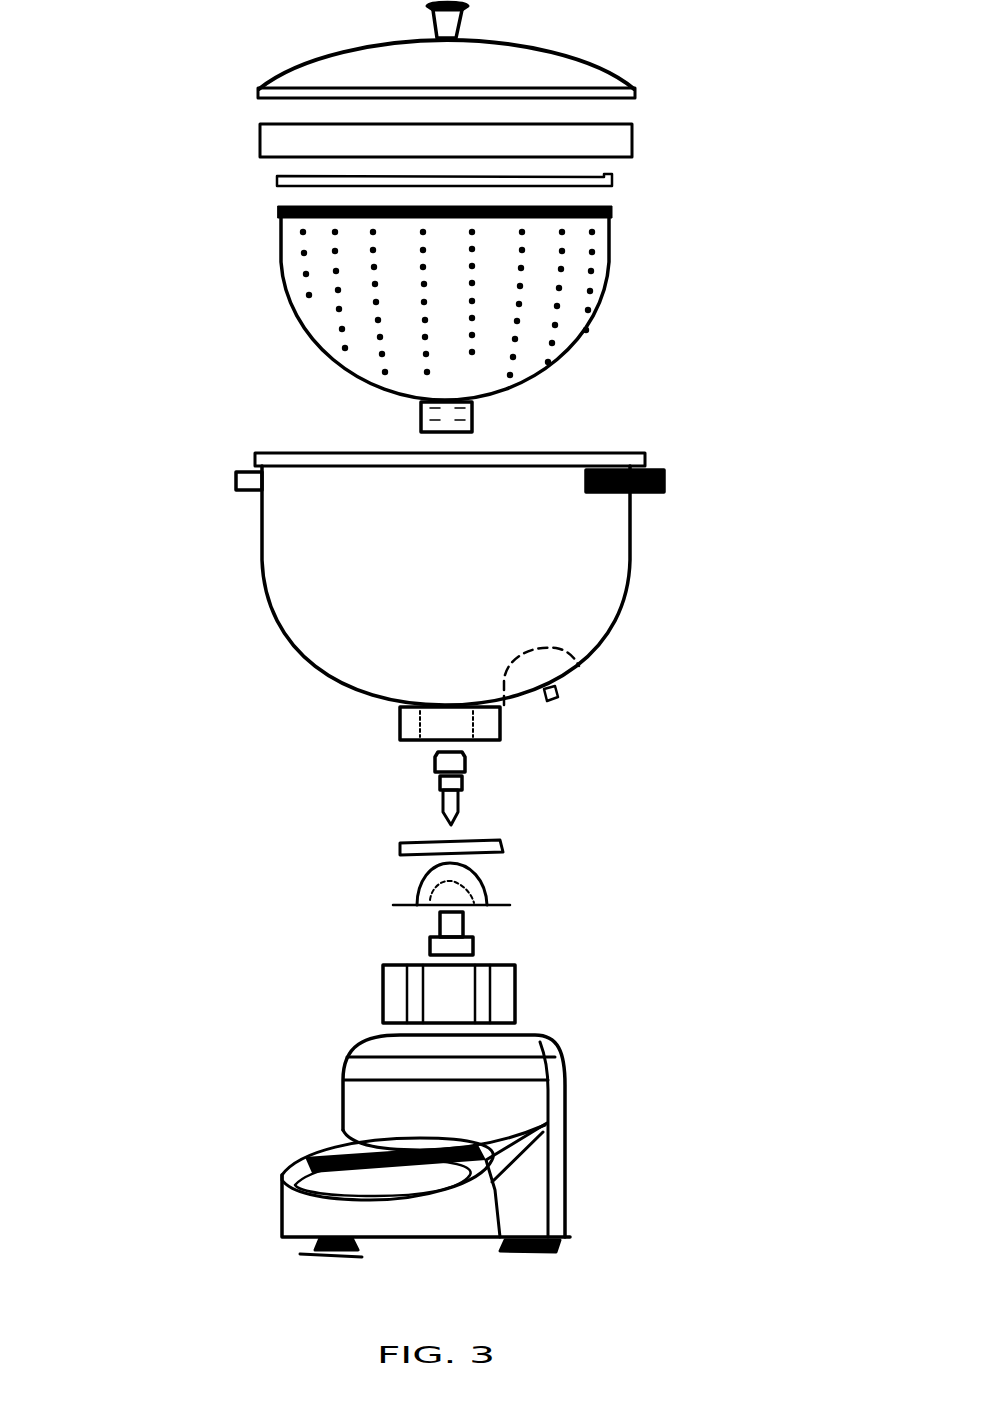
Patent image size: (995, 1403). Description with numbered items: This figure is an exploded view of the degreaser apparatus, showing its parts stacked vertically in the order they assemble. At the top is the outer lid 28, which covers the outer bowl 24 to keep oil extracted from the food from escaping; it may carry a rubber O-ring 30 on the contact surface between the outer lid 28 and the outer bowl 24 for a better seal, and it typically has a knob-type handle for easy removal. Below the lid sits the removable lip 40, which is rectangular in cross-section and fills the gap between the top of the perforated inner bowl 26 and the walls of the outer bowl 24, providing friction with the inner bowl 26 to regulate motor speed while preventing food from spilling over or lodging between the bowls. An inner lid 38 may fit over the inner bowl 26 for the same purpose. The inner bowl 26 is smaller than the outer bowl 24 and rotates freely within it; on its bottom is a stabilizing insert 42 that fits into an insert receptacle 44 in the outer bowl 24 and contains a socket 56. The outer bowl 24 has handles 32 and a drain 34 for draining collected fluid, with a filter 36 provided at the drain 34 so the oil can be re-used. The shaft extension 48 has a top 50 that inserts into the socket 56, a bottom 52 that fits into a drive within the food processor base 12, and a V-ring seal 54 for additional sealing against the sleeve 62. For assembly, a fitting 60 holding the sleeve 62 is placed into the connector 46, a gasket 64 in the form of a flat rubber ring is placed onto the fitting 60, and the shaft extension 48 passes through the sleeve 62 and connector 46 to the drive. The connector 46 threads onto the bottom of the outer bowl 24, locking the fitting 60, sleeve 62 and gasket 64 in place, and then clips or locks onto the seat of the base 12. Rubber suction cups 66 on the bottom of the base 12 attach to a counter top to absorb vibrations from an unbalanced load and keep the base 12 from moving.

The food processor base 12 is at (355, 1103).
The outer bowl 24 is at (568, 570).
The perforated inner bowl 26 is at (612, 262).
The outer lid 28 is at (545, 64).
The rubber O-ring 30 is at (258, 90).
The handles 32 is at (666, 481).
The drain 34 is at (559, 695).
The filter 36 is at (550, 664).
The inner lid 38 is at (277, 180).
The removable lip 40 is at (633, 140).
The stabilizing insert 42 is at (421, 412).
The insert receptacle 44 is at (437, 722).
The connector 46 is at (500, 994).
The shaft extension 48 is at (485, 781).
The top of shaft extension 50 is at (435, 760).
The bottom of shaft extension 52 is at (443, 818).
The V-ring seal 54 is at (440, 785).
The socket 56 is at (472, 417).
The fitting 60 is at (417, 890).
The sleeve 62 is at (430, 945).
The gasket 64 is at (503, 846).
The rubber suction cups 66 is at (560, 1245).